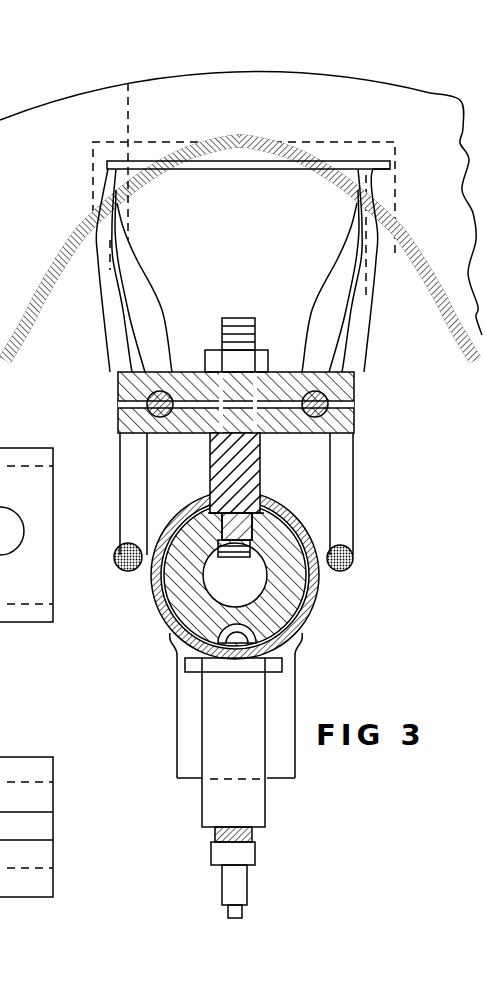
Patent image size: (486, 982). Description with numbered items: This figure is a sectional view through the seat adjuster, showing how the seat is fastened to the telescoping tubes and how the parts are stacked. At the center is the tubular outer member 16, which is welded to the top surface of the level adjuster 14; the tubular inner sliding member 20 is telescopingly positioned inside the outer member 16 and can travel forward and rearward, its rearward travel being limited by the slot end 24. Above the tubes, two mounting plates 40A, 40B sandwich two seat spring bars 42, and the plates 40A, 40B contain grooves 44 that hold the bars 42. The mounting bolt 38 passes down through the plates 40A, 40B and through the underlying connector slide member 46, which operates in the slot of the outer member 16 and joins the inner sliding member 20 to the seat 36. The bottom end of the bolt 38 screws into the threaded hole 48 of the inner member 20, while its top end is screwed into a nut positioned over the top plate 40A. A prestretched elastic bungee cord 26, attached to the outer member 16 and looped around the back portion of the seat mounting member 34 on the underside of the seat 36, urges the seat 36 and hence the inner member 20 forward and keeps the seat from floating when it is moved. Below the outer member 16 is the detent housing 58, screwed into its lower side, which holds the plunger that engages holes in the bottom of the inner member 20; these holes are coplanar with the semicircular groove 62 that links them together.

The level adjuster 14 is at (296, 682).
The tubular outer member 16 is at (151, 587).
The tubular inner sliding member 20 is at (183, 602).
The slot end 24 is at (37, 537).
The elastic bungee cord 26 is at (128, 83).
The seat mounting member 34 is at (237, 162).
The seat 36 is at (431, 96).
The mounting bolt 38 is at (240, 317).
The top mounting plate 40A is at (133, 370).
The bottom mounting plate 40B is at (117, 428).
The seat spring bars 42 is at (117, 399).
The grooves 44 is at (117, 413).
The connector slide member 46 is at (263, 460).
The threaded hole 48 is at (257, 557).
The detent housing 58 is at (227, 727).
The semicircular groove 62 is at (182, 633).